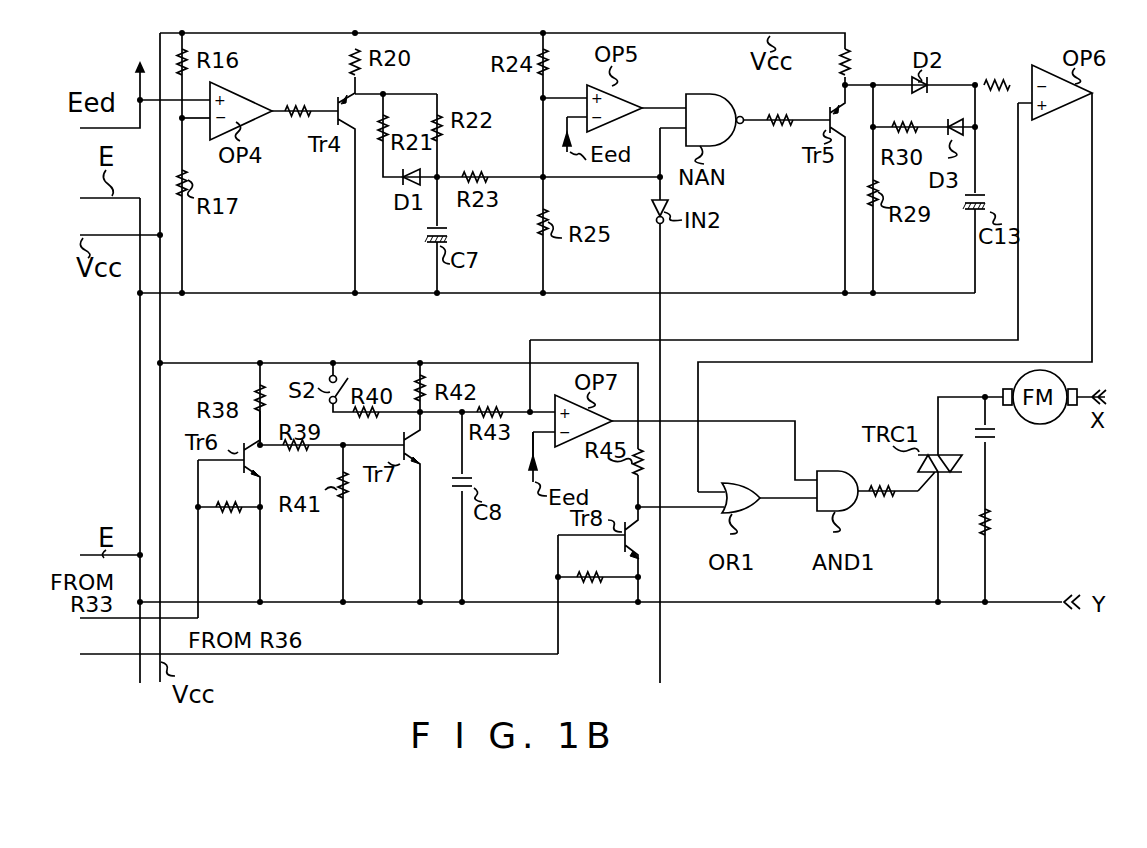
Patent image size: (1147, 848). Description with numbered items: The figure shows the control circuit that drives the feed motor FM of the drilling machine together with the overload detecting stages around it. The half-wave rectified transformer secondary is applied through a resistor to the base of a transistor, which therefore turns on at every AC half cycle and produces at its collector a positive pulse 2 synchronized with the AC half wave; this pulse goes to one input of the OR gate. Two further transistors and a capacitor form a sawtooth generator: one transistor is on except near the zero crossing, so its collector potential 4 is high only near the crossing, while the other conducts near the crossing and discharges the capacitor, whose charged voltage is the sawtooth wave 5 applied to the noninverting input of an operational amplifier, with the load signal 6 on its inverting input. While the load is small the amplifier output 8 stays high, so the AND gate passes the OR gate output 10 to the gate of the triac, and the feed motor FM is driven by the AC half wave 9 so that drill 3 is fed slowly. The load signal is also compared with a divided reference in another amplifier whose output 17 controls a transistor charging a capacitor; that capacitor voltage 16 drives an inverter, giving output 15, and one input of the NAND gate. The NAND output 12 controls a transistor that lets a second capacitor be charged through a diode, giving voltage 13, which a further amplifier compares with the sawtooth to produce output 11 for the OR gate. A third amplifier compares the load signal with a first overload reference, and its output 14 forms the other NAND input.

The collector signal of transistor Tr8 2 is at (688, 511).
The drill 3 is at (200, 545).
The collector potential of transistor Tr6 4 is at (262, 450).
The sawtooth wave signal 5 is at (536, 404).
The load signal Eed 6 is at (530, 456).
The output of operation amplifier OP7 8 is at (756, 420).
The feed motor drive waveform 9 is at (948, 382).
The output of OR gate OR1 10 is at (790, 503).
The output of operation amplifier OP6 11 is at (1094, 158).
The output of NAND gate NAN 12 is at (746, 124).
The terminal voltage of capacitor C13 13 is at (976, 152).
The output of operation amplifier OP5 14 is at (655, 108).
The output of inverter IN2 15 is at (661, 252).
The terminal voltage of capacitor C7 16 is at (440, 208).
The output of operation amplifier OP4 17 is at (284, 108).